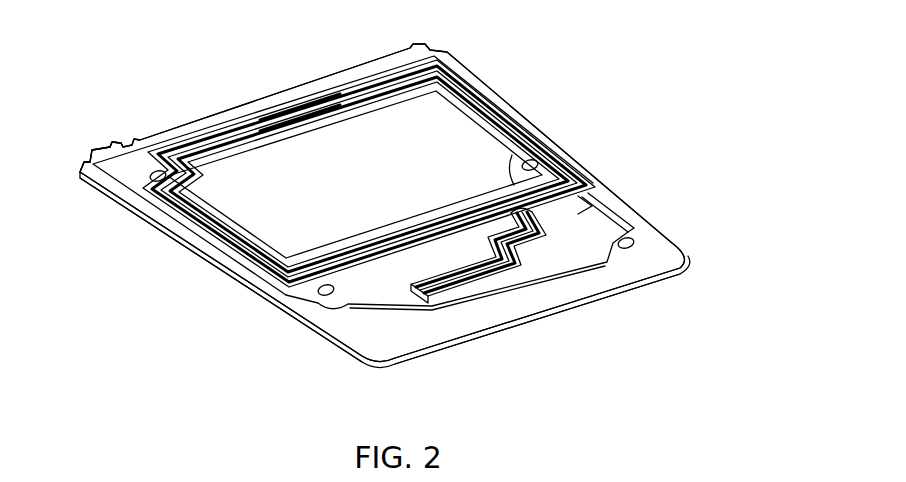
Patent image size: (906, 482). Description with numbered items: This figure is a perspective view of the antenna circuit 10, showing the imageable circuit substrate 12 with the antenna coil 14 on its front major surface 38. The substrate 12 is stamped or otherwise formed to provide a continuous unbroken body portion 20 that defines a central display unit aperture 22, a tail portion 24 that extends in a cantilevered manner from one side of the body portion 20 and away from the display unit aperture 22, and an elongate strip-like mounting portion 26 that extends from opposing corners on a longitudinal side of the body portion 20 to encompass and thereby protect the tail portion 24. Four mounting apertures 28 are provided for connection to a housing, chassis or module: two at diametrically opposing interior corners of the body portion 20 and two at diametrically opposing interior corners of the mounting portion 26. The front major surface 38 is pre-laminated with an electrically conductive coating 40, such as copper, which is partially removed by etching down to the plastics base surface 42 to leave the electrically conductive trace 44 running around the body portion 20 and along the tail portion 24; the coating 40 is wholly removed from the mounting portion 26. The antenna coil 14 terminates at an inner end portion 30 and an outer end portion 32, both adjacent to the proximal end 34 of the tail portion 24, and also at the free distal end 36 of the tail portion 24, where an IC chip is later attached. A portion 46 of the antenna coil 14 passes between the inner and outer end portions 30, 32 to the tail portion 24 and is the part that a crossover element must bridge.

The antenna circuit 10 is at (608, 52).
The circuit substrate 12 is at (672, 248).
The antenna coil 14 is at (472, 70).
The body portion 20 is at (183, 237).
The display unit aperture 22 is at (337, 180).
The tail portion 24 is at (520, 268).
The mounting portion 26 is at (600, 290).
The mounting apertures 28 is at (150, 178).
The inner end portion 30 is at (540, 165).
The outer end portion 32 is at (502, 210).
The proximal end 34 is at (612, 215).
The free distal end 36 is at (347, 303).
The front major surface 38 is at (117, 140).
The electrically conductive coating 40 is at (238, 117).
The plastics base surface 42 is at (102, 157).
The electrically conductive trace 44 is at (320, 108).
The portion of the antenna coil 46 is at (587, 203).